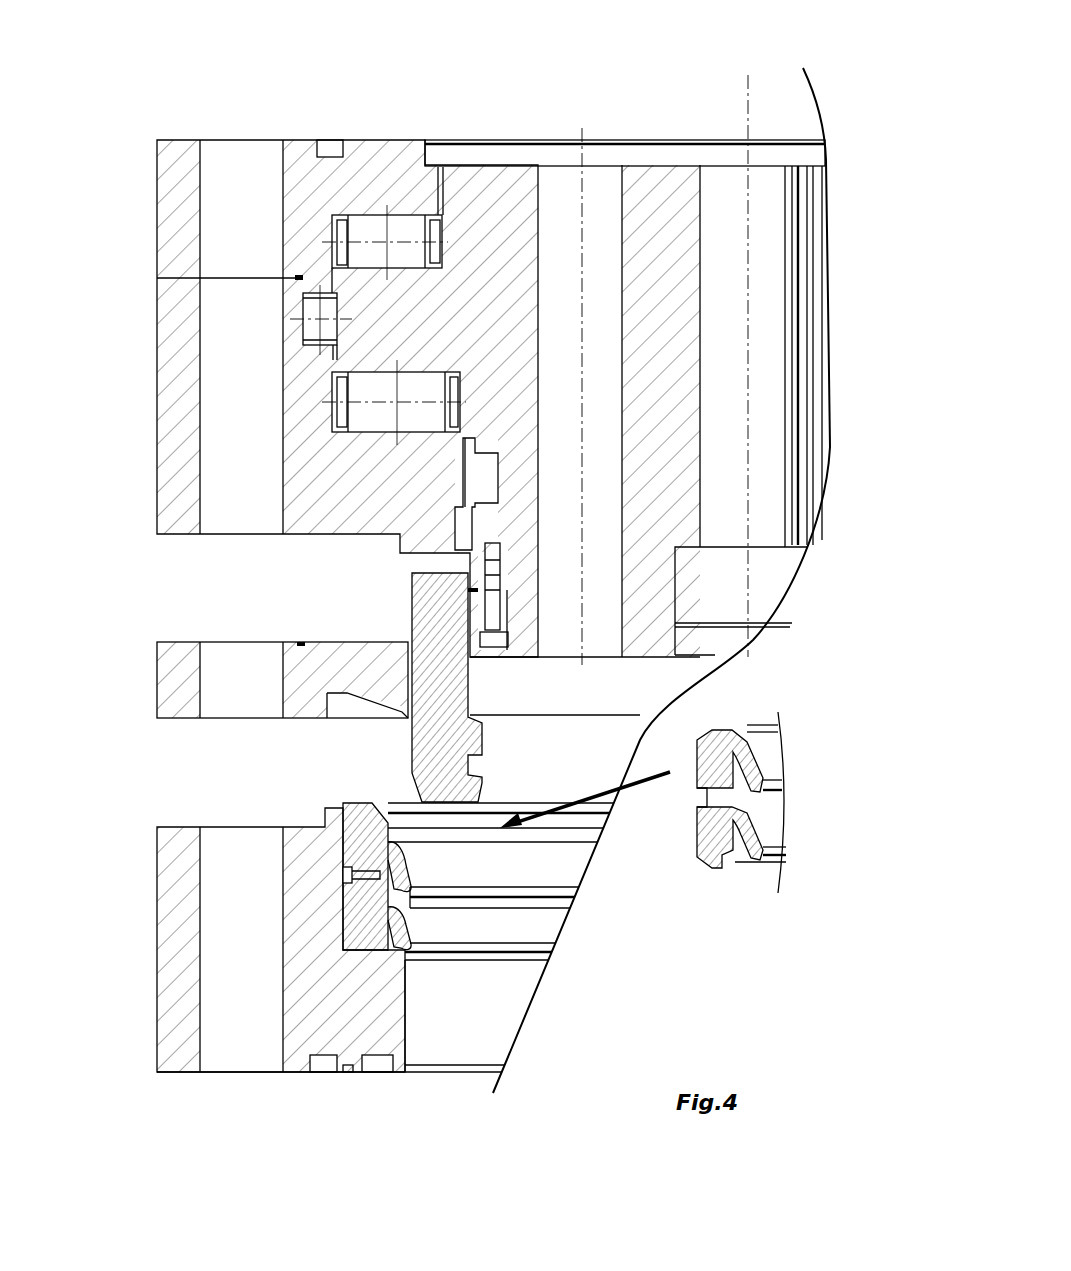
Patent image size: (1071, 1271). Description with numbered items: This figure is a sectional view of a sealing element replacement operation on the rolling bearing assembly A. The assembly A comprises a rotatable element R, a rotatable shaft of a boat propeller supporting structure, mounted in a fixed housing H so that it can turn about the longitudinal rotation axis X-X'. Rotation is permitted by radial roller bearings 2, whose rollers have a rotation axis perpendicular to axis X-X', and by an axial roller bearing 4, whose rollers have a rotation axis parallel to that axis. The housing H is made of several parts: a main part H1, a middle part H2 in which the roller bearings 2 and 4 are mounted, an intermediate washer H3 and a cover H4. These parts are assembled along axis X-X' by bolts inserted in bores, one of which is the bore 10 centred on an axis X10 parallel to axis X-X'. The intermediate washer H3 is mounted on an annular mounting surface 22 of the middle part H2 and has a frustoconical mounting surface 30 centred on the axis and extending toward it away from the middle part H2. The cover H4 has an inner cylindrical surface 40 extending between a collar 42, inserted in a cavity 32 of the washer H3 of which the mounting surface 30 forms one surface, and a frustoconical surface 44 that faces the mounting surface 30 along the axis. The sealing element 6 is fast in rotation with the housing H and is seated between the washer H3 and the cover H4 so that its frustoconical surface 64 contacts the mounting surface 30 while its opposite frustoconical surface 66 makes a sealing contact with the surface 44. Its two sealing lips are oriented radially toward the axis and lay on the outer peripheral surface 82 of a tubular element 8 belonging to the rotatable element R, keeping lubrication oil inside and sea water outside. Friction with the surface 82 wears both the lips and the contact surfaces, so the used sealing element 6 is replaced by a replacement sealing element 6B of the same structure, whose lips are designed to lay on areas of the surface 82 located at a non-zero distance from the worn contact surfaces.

The rolling bearing assembly A is at (138, 120).
The bore 10 is at (217, 150).
The axial roller bearing 4 is at (315, 290).
The main part H1 is at (355, 160).
The housing H is at (385, 140).
The radial roller bearing 2 is at (427, 388).
The rotatable element R is at (555, 148).
The longitudinal rotation axis end X' is at (661, 577).
The middle part H2 is at (175, 348).
The annular mounting surface 22 is at (177, 537).
The tubular element 8 is at (410, 620).
The intermediate washer H3 is at (175, 680).
The cavity 32 is at (333, 706).
The collar 42 is at (327, 812).
The mounting surface 30 is at (358, 714).
The outer peripheral surface 82 is at (407, 757).
The frustoconical surface 64 is at (380, 800).
The replacement sealing element 6B is at (702, 737).
The longitudinal rotation axis end X is at (749, 677).
The inner cylindrical surface 40 is at (372, 915).
The frustoconical surface 66 is at (372, 950).
The sealing element 6 is at (343, 903).
The frustoconical surface 44 is at (358, 917).
The cover H4 is at (177, 1017).
The bore axis X10 is at (259, 1163).